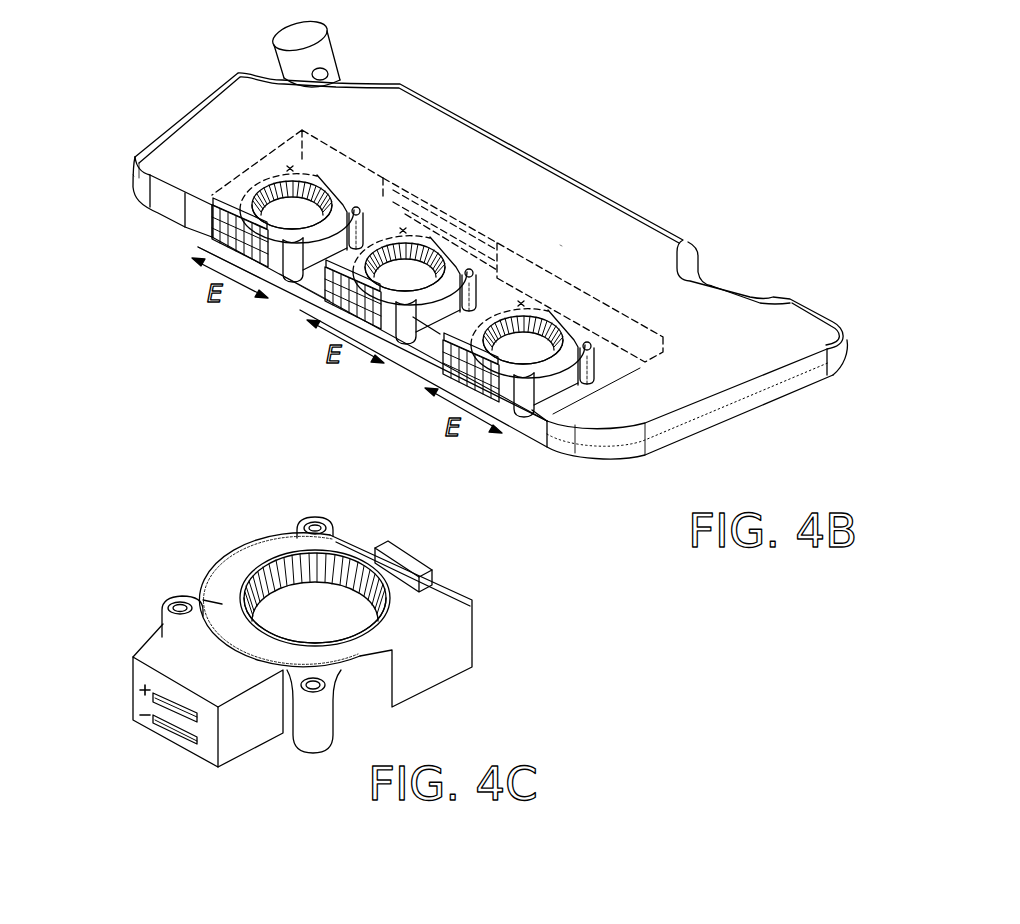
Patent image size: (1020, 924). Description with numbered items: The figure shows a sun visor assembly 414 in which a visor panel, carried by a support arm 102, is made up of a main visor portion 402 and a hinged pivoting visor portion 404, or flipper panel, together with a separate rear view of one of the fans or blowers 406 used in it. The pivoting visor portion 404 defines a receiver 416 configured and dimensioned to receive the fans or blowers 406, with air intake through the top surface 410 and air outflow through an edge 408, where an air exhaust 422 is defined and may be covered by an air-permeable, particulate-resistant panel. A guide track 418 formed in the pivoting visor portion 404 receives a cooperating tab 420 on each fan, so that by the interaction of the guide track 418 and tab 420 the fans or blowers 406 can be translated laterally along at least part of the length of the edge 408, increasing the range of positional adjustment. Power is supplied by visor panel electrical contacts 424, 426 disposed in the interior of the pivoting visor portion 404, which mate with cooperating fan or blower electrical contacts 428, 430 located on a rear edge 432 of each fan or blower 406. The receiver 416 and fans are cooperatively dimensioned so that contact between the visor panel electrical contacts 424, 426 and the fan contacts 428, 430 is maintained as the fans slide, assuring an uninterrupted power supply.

In FIG. 4B, the support arm 102 is at (318, 62).
In FIG. 4B, the main visor portion 402 is at (223, 107).
In FIG. 4B, the pivoting visor portion 404 is at (197, 241).
In FIG. 4B, the fan or blower 406 is at (297, 197).
In FIG. 4C, the fan or blower 406 is at (423, 677).
In FIG. 4B, the edge 408 is at (143, 191).
In FIG. 4B, the top surface 410 is at (594, 236).
In FIG. 4B, the sun visor assembly 414 is at (549, 133).
In FIG. 4B, the receiver 416 is at (200, 190).
In FIG. 4B, the guide track 418 is at (237, 202).
In FIG. 4B, the cooperating tab 420 is at (200, 248).
In FIG. 4C, the cooperating tab 420 is at (412, 558).
In FIG. 4B, the air exhaust 422 is at (313, 290).
In FIG. 4B, the visor panel electrical contact 424 is at (403, 187).
In FIG. 4B, the visor panel electrical contact 426 is at (438, 206).
In FIG. 4C, the fan or blower electrical contact 428 is at (163, 705).
In FIG. 4C, the fan or blower electrical contact 430 is at (175, 730).
In FIG. 4C, the rear edge 432 is at (209, 742).